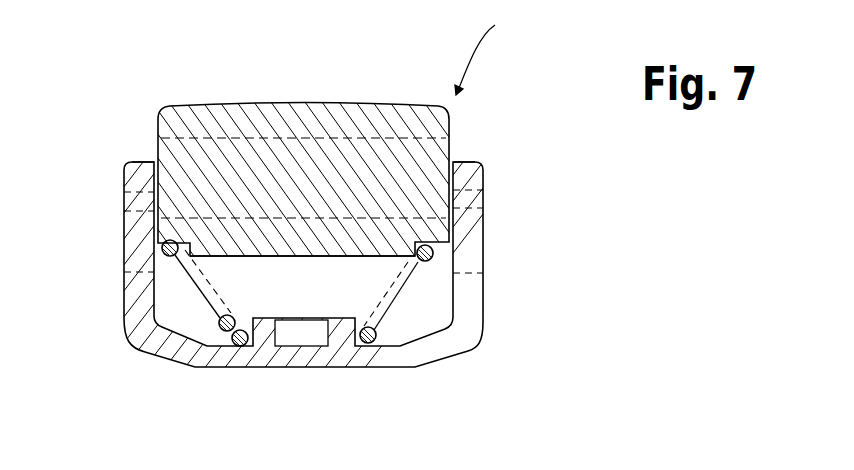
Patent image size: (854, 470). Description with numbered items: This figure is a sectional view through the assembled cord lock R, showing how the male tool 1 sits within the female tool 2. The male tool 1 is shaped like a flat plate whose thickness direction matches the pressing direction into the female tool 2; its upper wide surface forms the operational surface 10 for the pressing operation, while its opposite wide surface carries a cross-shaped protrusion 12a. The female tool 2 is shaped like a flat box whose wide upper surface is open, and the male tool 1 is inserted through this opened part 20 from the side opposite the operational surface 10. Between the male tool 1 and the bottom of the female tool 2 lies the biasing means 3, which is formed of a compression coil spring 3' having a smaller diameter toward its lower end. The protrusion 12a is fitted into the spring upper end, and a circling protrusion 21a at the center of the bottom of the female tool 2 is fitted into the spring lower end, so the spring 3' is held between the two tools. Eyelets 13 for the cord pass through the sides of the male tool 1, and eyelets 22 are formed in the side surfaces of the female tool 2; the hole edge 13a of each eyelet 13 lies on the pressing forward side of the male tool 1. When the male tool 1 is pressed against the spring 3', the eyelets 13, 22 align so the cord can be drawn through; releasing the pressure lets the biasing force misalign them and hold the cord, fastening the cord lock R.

The male tool 1 is at (293, 214).
The female tool 2 is at (295, 253).
The biasing means 3 is at (279, 348).
The compression coil spring 3' is at (396, 294).
The operational surface 10 is at (293, 223).
The cross-shaped protrusion 12a is at (387, 258).
The eyelet 13 is at (217, 157).
The hole edge 13a is at (124, 219).
The opened part 20 is at (453, 161).
The circling protrusion 21a is at (266, 348).
The eyelet 22 is at (123, 270).
The cord lock R is at (487, 52).